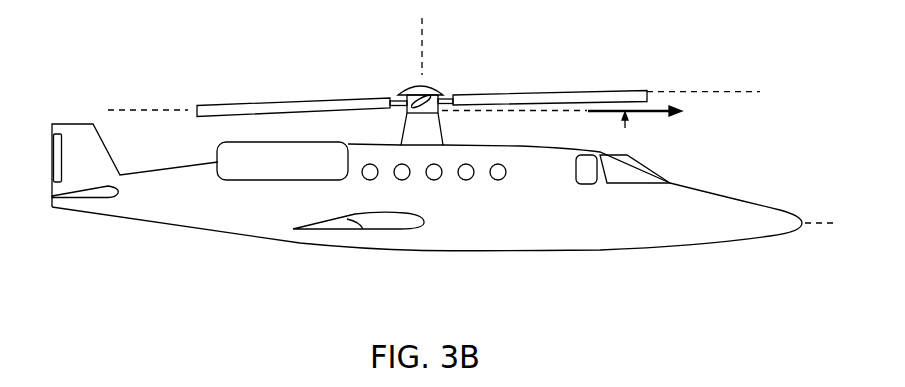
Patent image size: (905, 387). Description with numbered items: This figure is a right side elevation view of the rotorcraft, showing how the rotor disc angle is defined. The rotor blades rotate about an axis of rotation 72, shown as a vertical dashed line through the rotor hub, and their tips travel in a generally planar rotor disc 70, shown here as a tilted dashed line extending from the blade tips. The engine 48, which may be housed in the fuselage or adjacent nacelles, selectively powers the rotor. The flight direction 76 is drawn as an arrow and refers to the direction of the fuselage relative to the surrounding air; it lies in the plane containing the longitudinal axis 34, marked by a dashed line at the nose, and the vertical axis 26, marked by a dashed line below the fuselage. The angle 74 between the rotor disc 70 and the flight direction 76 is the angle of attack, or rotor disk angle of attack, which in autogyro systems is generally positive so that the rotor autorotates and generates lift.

The vertical axis 26 is at (422, 255).
The longitudinal axis 34 is at (817, 222).
The engine 48 is at (267, 104).
The rotor disc 70 is at (733, 90).
The axis of rotation 72 is at (425, 35).
The angle of attack 74 is at (621, 91).
The flight direction 76 is at (652, 116).